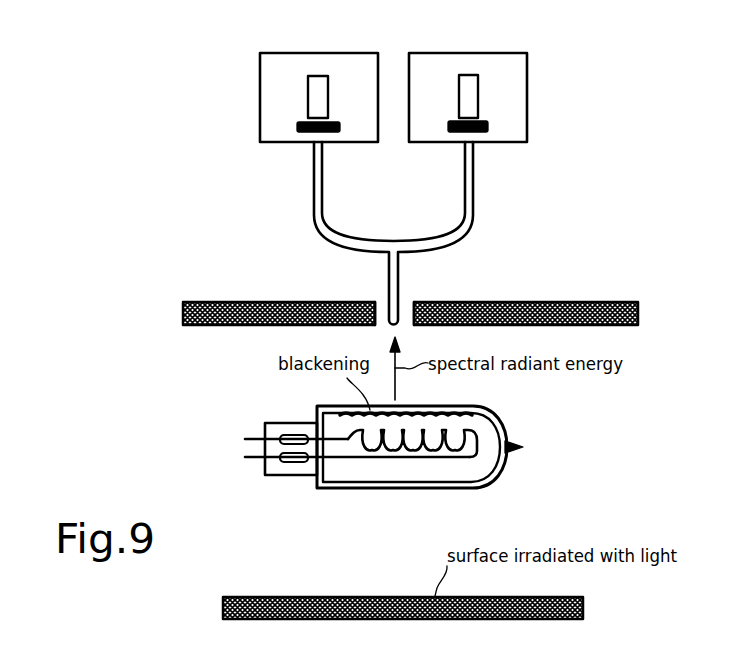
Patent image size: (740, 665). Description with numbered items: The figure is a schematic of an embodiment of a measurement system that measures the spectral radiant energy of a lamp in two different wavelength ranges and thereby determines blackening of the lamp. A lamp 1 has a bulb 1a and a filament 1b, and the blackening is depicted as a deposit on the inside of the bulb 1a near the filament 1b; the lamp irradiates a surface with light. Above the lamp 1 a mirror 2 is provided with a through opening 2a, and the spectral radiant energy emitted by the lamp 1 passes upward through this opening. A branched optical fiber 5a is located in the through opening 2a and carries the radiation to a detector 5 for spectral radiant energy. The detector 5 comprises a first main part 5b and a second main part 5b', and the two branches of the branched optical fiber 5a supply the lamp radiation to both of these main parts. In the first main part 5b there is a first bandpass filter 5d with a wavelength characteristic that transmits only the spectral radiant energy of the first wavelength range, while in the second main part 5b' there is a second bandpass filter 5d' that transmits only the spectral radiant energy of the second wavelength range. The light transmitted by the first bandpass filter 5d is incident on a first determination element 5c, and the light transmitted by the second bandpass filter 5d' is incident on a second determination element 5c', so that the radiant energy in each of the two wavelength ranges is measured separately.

The lamp 1 is at (312, 414).
The bulb 1a is at (505, 465).
The filament 1b is at (421, 452).
The mirror 2 is at (253, 325).
The through opening 2a is at (407, 302).
The detector 5 is at (162, 56).
The branched optical fiber 5a is at (473, 198).
The first main part 5b is at (319, 77).
The second main part 5b' is at (468, 77).
The first determination element 5c is at (257, 97).
The second determination element 5c' is at (532, 96).
The first bandpass filter 5d is at (263, 139).
The second bandpass filter 5d' is at (526, 138).